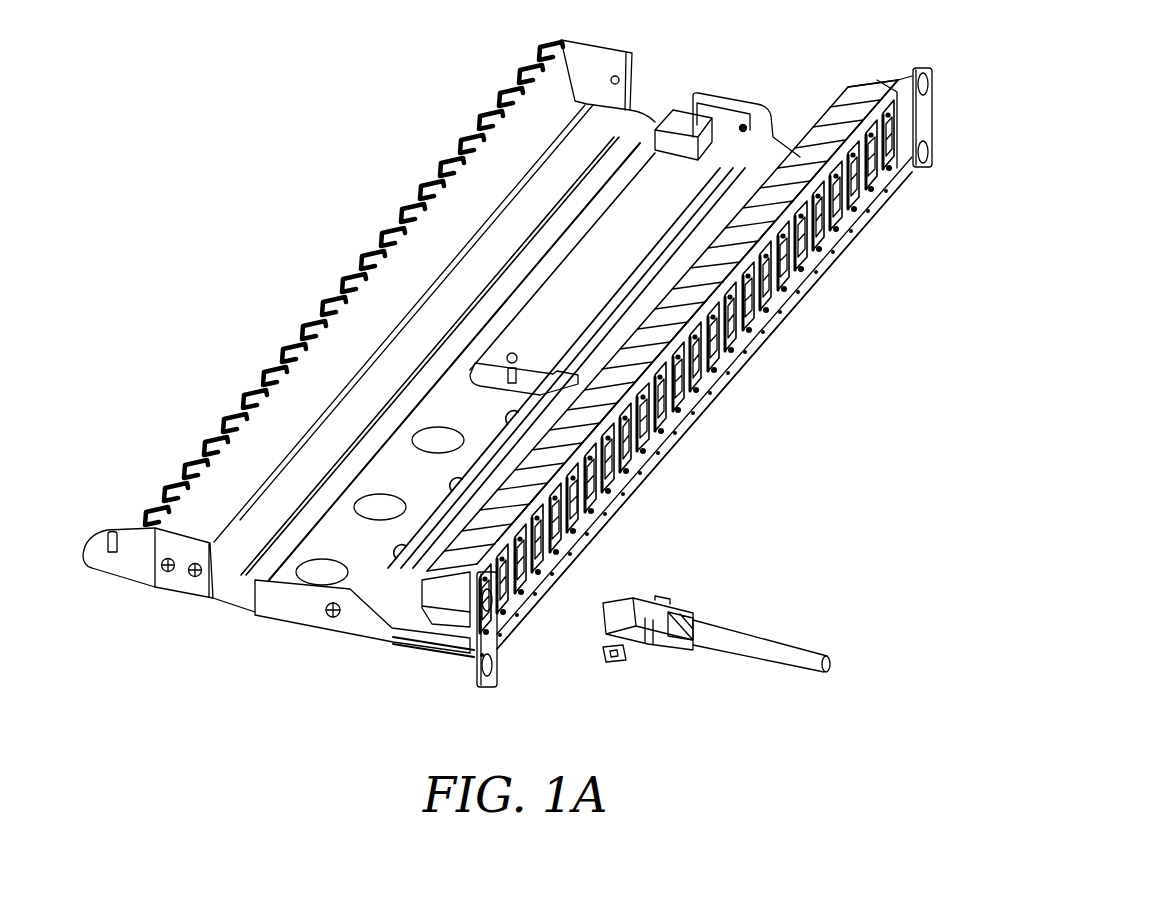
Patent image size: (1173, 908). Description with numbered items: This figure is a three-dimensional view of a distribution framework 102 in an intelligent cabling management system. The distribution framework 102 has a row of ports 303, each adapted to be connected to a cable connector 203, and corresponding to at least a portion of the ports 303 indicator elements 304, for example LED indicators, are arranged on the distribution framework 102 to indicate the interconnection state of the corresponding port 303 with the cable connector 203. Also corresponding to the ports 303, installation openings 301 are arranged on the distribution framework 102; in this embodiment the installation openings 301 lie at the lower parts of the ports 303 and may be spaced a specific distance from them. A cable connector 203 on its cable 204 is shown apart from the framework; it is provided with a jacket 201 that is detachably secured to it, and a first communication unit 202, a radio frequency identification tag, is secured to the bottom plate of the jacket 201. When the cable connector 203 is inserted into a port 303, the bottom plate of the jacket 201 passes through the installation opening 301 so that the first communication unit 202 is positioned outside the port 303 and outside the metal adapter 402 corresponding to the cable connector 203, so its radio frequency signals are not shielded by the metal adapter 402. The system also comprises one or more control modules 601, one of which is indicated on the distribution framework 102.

The distribution framework 102 is at (461, 655).
The jacket 201 is at (651, 648).
The first communication unit 202 is at (602, 648).
The cable connector 203 is at (627, 614).
The cable 204 is at (758, 648).
The installation opening 301 is at (904, 167).
The port 303 is at (914, 120).
The indicator element 304 is at (895, 92).
The metal adapter 402 is at (861, 84).
The control module 601 is at (380, 608).